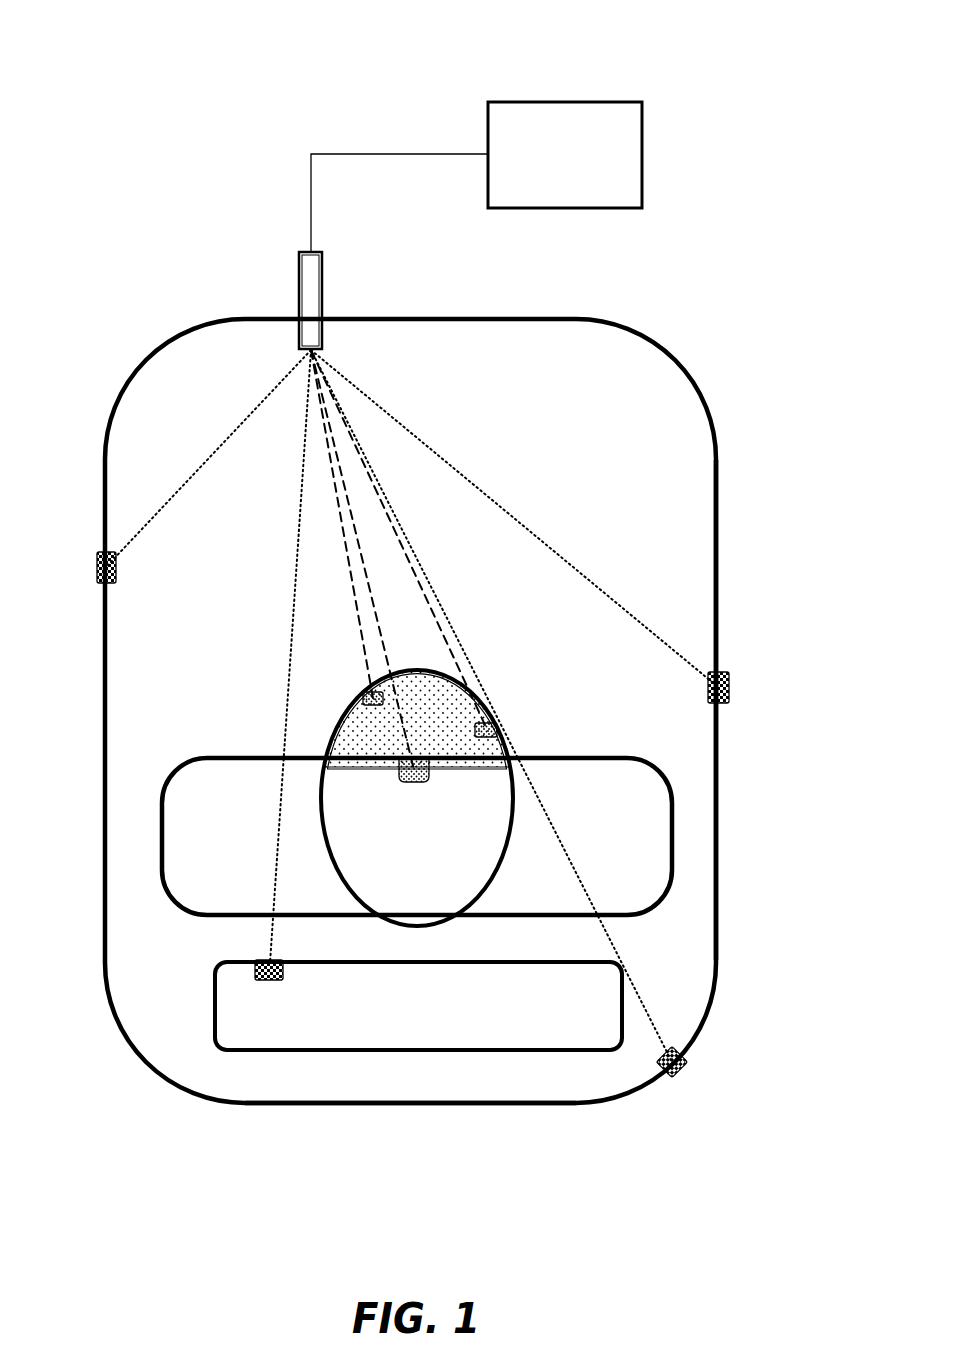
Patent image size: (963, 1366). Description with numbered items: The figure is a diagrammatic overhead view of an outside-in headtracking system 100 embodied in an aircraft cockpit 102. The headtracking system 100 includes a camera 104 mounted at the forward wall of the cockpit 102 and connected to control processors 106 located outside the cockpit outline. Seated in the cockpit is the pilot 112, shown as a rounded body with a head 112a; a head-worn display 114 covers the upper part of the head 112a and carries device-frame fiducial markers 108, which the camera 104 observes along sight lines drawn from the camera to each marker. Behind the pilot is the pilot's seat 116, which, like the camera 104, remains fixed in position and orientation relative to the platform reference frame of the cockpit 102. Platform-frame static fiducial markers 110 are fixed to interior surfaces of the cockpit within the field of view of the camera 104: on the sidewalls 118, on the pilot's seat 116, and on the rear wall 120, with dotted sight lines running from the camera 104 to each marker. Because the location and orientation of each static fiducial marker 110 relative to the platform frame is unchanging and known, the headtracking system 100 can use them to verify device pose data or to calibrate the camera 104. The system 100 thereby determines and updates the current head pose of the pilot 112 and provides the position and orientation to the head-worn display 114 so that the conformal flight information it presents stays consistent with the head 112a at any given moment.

The outside-in headtracking system 100 is at (95, 71).
The aircraft cockpit 102 is at (718, 300).
The camera 104 is at (300, 305).
The control processors 106 is at (587, 173).
The device-frame fiducial markers 108 is at (500, 735).
The platform-frame static fiducial markers 110 is at (100, 555).
The pilot 112 is at (590, 837).
The head of the pilot 112a is at (424, 845).
The head-worn display 114 is at (449, 715).
The pilot's seat 116 is at (380, 998).
The sidewall 118 is at (718, 497).
The rear wall 120 is at (559, 1105).